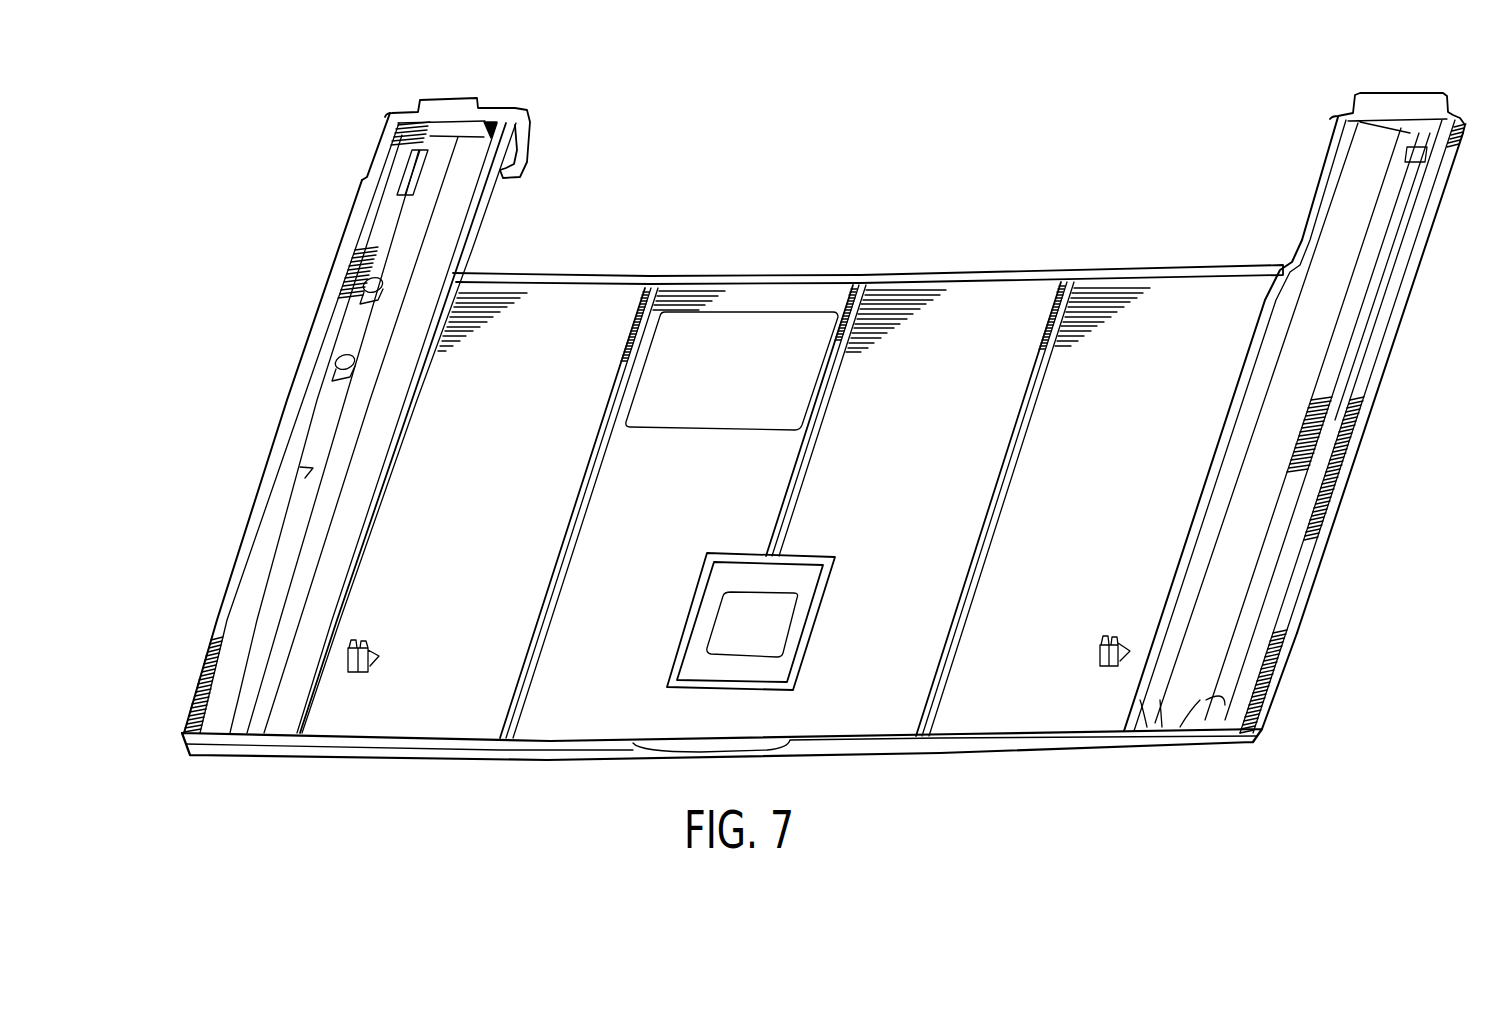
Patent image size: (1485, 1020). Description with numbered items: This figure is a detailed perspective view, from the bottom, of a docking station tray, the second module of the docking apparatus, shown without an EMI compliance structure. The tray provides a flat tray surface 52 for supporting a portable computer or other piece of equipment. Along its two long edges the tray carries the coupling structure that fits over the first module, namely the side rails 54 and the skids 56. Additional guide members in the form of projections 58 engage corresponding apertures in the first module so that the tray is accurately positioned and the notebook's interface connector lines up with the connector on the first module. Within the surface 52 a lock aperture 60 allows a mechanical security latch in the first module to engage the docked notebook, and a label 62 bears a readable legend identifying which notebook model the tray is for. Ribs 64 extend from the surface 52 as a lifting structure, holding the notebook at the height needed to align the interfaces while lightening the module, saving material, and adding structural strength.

The flat tray surface 52 is at (867, 721).
The side rails 54 is at (283, 563).
The skids 56 is at (370, 187).
The projections 58 is at (373, 656).
The lock aperture 60 is at (783, 628).
The label 62 is at (742, 330).
The ribs 64 is at (1040, 340).